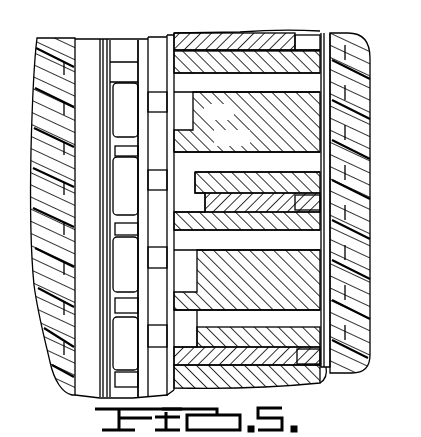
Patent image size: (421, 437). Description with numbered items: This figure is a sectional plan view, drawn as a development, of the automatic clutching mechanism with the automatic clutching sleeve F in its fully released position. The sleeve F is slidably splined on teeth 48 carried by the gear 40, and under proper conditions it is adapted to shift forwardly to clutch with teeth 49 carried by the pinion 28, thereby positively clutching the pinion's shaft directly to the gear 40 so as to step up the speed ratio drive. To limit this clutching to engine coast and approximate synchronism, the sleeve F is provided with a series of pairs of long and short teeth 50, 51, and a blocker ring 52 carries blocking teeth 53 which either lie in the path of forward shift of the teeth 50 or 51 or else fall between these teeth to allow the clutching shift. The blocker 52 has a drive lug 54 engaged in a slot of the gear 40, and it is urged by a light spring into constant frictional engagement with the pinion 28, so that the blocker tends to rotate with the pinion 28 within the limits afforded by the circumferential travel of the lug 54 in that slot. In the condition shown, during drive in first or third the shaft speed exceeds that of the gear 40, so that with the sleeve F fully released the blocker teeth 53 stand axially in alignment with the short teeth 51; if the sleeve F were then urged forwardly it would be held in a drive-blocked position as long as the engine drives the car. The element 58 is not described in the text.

The pinion 28 is at (52, 97).
The teeth 49 is at (122, 72).
The blocker ring 52 is at (157, 30).
The blocking teeth 53 is at (150, 102).
The short teeth 51 is at (141, 207).
The long teeth 50 is at (190, 117).
The packing insert 58 is at (200, 145).
The drive lug 54 is at (203, 205).
The teeth 48 is at (287, 32).
The automatic clutching sleeve F is at (308, 118).
The gear 40 is at (345, 185).